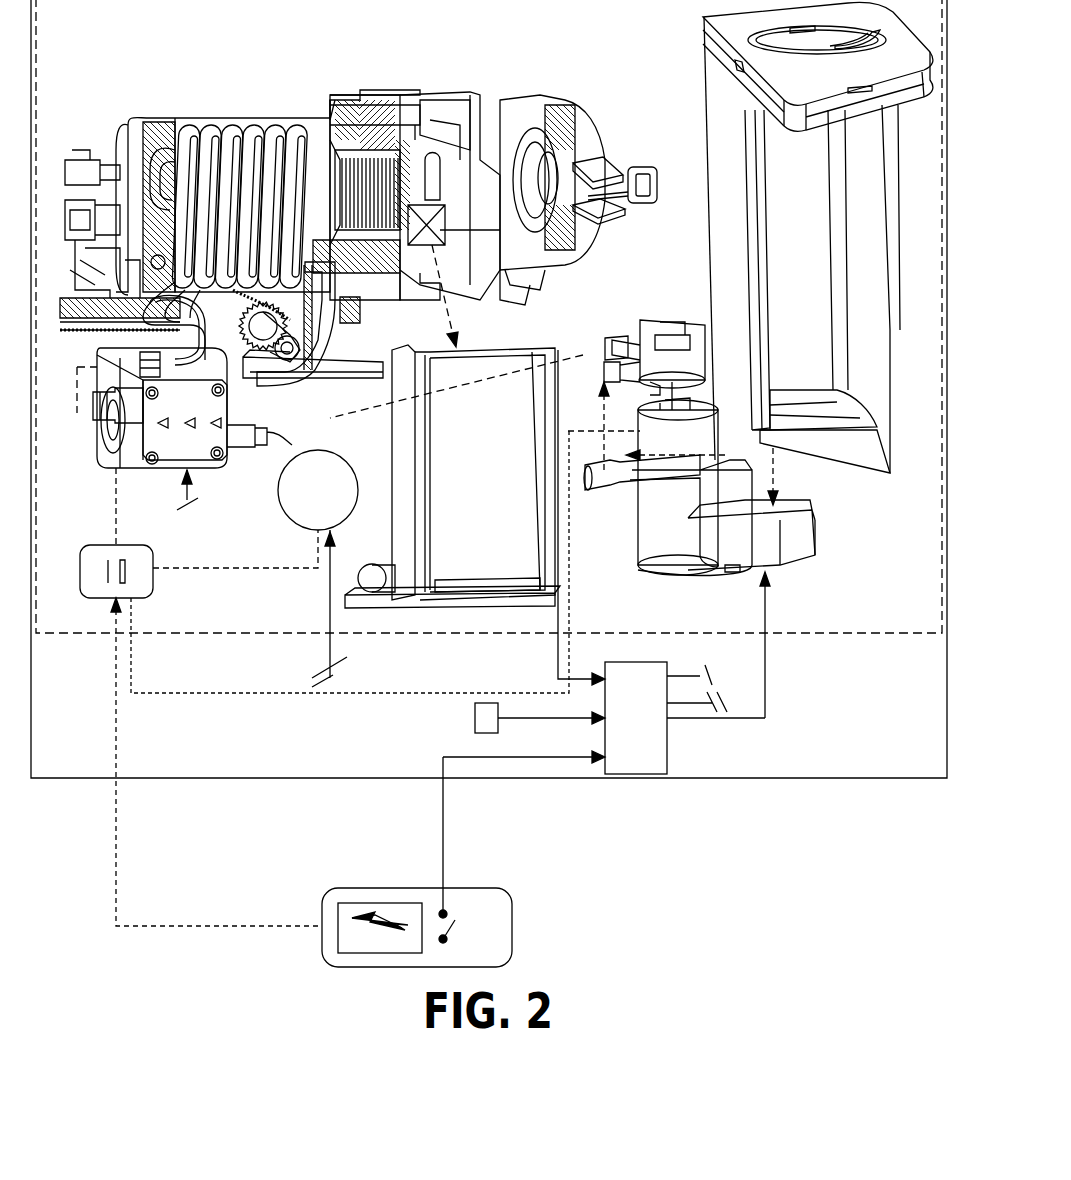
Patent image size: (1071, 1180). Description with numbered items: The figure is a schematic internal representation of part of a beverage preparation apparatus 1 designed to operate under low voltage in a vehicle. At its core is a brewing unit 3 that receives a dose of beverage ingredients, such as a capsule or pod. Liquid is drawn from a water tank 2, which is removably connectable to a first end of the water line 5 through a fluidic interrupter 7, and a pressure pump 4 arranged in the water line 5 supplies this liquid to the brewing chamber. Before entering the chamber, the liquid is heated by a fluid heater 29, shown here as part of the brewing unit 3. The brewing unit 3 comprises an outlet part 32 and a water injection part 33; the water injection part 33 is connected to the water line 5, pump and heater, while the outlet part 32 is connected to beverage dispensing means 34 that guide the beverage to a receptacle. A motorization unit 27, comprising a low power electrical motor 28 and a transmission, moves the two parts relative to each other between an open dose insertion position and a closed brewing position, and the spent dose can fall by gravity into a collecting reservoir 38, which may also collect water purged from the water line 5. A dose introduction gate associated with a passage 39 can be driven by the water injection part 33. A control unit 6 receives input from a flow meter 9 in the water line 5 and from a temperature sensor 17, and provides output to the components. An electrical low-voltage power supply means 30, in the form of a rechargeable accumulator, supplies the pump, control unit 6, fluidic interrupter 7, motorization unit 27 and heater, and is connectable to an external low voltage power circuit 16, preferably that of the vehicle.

The beverage preparation apparatus 1 is at (882, 778).
The water tank 2 is at (696, 52).
The brewing unit 3 is at (252, 189).
The pressure pump 4 is at (215, 470).
The water line 5 is at (568, 353).
The control unit 6 is at (670, 765).
The fluidic interrupter 7 is at (822, 530).
The flow meter 9 is at (668, 325).
The external low voltage power circuit 16 is at (512, 930).
The temperature sensor 17 is at (475, 715).
The motorization unit 27 is at (353, 342).
The low power electrical motor 28 is at (302, 526).
The fluid heater 29 is at (205, 118).
The electrical low-voltage power supply means 30 is at (153, 588).
The outlet part 32 is at (555, 103).
The water injection part 33 is at (365, 122).
The beverage dispensing means 34 is at (623, 156).
The collecting reservoir 38 is at (403, 420).
The passage 39 is at (432, 128).